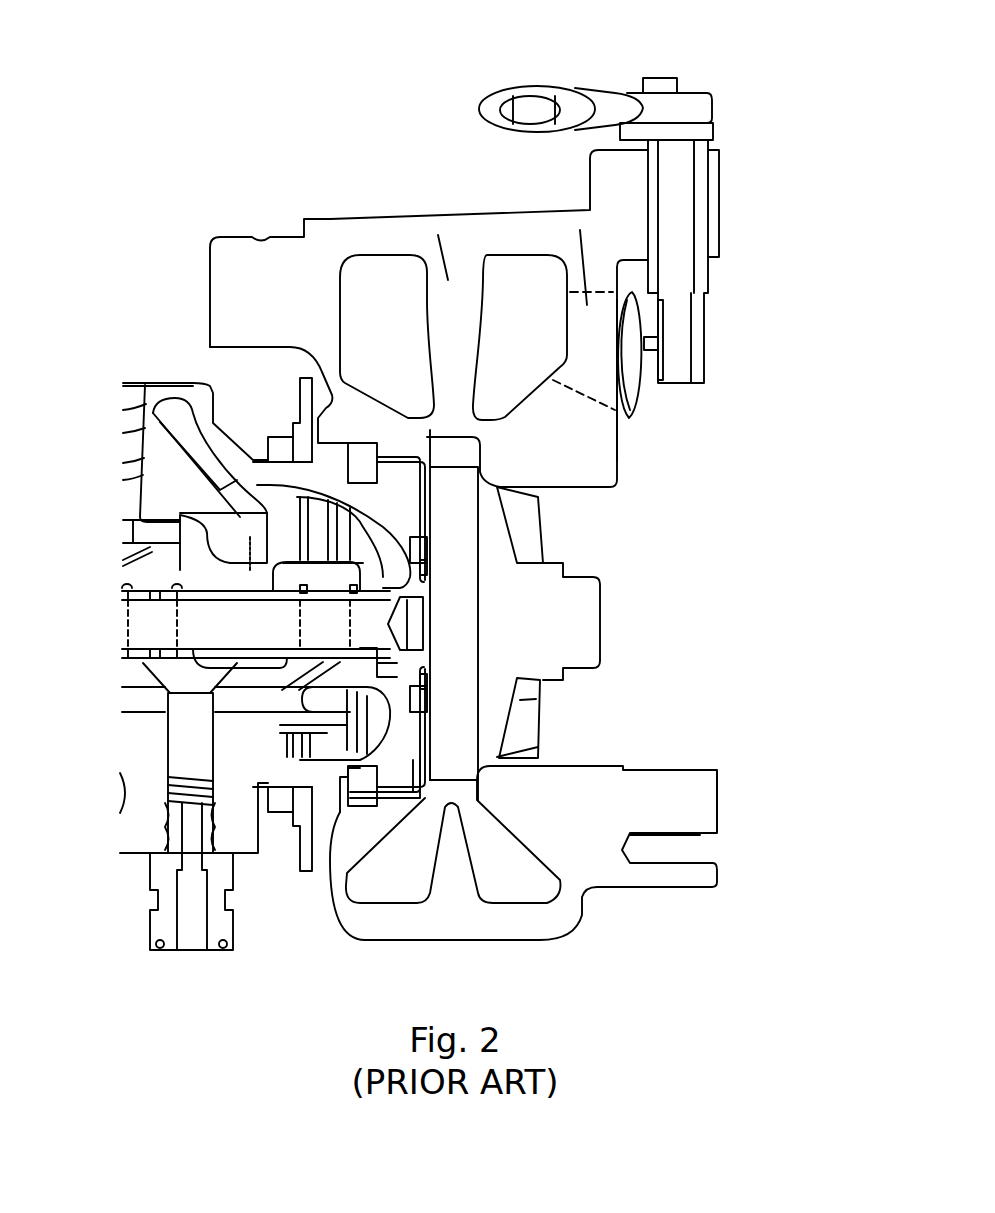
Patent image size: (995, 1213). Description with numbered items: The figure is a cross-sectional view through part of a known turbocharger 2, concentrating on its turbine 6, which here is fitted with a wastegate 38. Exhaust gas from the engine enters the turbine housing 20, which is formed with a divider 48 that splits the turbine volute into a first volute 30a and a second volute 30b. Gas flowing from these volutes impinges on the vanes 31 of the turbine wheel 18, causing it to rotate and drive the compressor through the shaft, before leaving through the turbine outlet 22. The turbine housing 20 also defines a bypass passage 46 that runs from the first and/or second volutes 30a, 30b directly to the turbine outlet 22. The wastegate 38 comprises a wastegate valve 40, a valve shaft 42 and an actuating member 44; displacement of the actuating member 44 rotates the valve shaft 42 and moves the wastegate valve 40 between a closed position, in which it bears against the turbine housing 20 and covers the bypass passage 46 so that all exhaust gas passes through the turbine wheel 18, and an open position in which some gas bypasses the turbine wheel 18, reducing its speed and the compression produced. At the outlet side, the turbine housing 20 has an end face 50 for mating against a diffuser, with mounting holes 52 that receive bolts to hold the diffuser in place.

The turbocharger 2 is at (158, 168).
The turbine 6 is at (276, 160).
The turbine wheel 18 is at (487, 703).
The turbine housing 20 is at (552, 922).
The turbine outlet 22 is at (647, 590).
The first volute 30a is at (358, 328).
The second volute 30b is at (507, 328).
The vanes 31 is at (528, 737).
The wastegate 38 is at (642, 440).
The wastegate valve 40 is at (645, 405).
The valve shaft 42 is at (673, 332).
The actuating member 44 is at (573, 86).
The bypass passage 46 is at (587, 305).
The divider 48 is at (448, 280).
The end face 50 is at (718, 796).
The mounting holes 52 is at (693, 852).